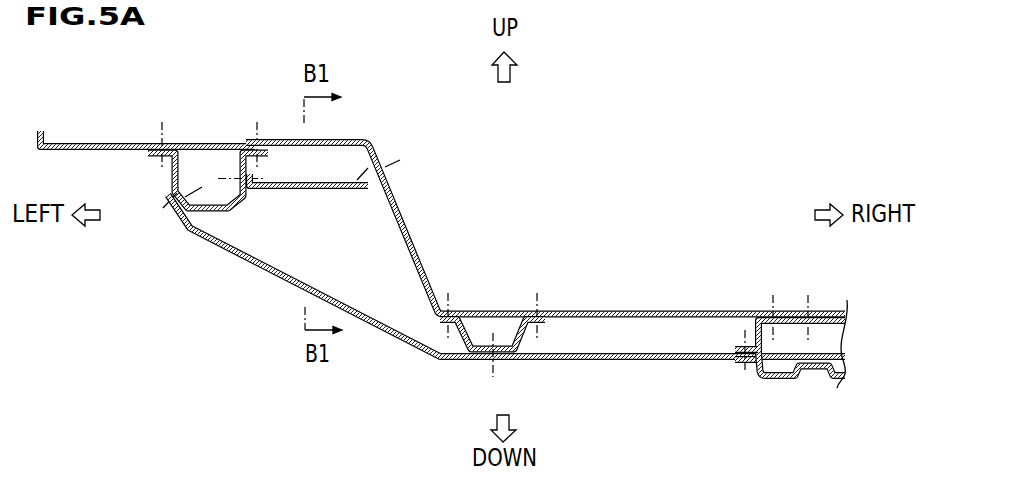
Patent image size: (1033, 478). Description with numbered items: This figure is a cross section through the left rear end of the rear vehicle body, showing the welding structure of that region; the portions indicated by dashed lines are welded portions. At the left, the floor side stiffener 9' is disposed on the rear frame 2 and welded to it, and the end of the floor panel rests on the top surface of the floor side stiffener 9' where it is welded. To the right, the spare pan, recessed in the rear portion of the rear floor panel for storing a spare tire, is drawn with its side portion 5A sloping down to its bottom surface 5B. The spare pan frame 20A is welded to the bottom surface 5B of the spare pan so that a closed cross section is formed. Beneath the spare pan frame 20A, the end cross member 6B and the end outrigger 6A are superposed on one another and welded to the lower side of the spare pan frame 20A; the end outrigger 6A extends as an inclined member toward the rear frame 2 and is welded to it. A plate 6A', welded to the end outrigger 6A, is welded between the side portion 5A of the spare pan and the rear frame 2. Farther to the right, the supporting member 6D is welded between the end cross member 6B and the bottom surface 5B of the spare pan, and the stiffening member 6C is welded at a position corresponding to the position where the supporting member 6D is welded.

The floor side stiffener 9' is at (148, 120).
The rear frame 2 is at (172, 174).
The plate 6A' is at (329, 144).
The side portion of the spare pan 5A is at (403, 223).
The bottom surface of the spare pan 5B is at (587, 312).
The spare pan frame 20A is at (468, 338).
The end outrigger 6A is at (506, 304).
The end cross member 6B is at (627, 358).
The supporting member 6D is at (822, 333).
The stiffening member 6C is at (781, 378).